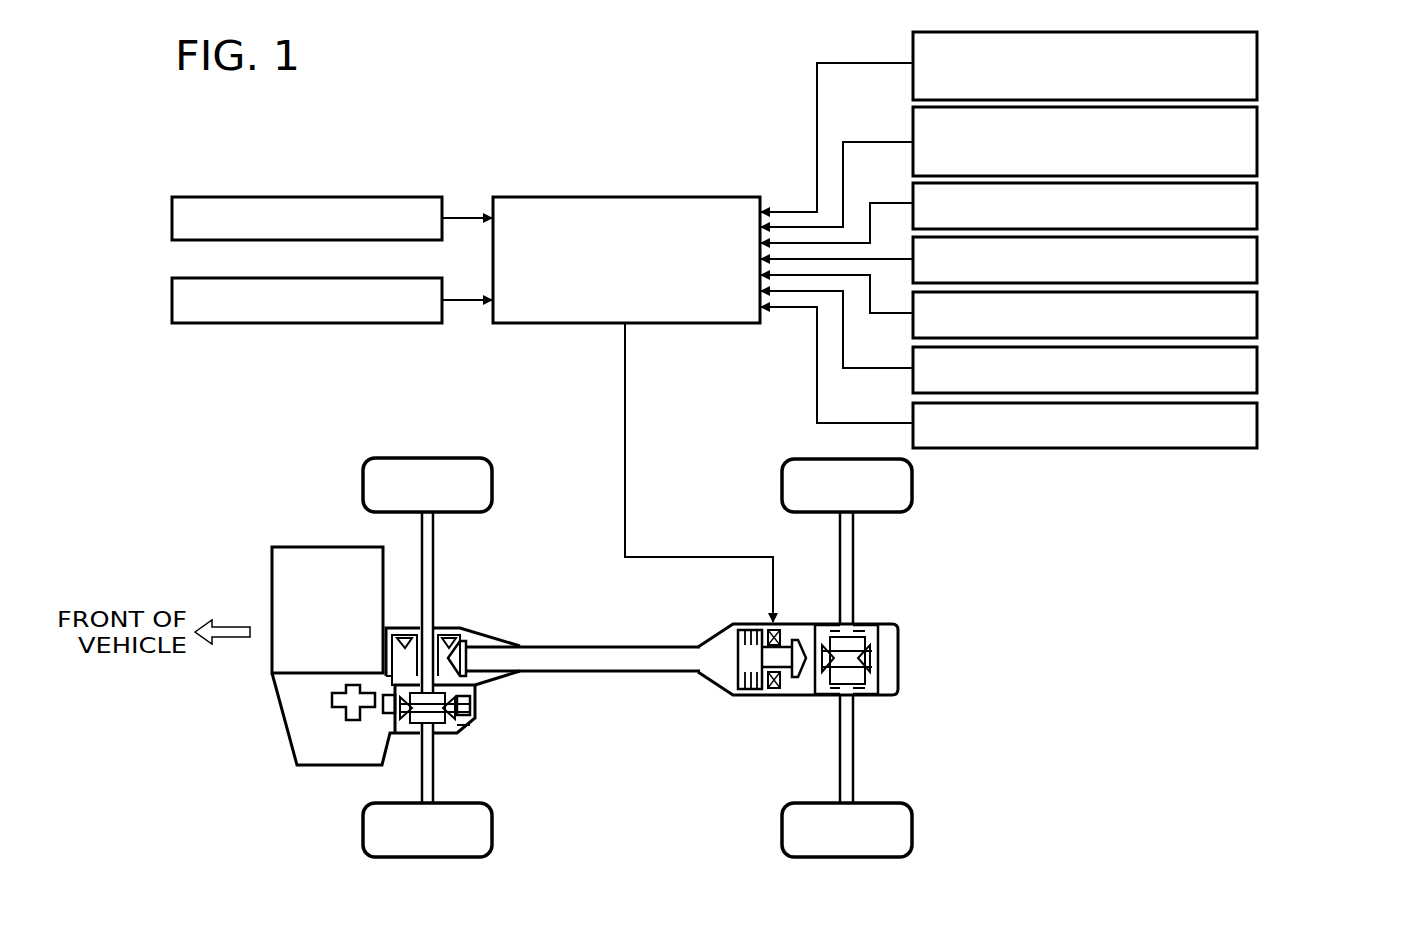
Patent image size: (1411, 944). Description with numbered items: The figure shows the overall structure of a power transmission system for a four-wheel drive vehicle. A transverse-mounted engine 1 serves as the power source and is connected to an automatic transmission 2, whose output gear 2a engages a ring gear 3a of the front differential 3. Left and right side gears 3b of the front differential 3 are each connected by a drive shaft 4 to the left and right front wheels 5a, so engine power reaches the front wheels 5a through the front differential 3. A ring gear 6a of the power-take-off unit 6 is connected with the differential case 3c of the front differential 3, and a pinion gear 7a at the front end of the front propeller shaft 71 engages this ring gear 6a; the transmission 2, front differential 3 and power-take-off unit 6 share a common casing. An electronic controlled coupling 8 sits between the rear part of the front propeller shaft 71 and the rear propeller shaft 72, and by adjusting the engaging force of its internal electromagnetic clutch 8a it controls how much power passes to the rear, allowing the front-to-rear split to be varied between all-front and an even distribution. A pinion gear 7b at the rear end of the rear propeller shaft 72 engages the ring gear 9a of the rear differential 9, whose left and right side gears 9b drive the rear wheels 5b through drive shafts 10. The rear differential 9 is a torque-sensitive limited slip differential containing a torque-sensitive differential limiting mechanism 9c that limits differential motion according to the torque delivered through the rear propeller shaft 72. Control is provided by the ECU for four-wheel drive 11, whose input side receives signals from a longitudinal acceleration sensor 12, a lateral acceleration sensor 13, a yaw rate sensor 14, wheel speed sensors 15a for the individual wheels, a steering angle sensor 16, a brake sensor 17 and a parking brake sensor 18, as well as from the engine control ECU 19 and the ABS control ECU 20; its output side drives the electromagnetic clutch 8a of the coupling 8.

The engine 1 is at (295, 547).
The automatic transmission 2 is at (275, 699).
The output gear 2a is at (363, 708).
The front differential gear unit 3 is at (467, 730).
The ring gear 3a is at (390, 710).
The side gears 3b is at (472, 695).
The differential case 3c is at (470, 720).
The drive shaft 4 is at (434, 534).
The front wheels 5a is at (493, 478).
The rear wheels 5b is at (784, 480).
The power-take-off unit 6 is at (447, 630).
The ring gear 6a is at (411, 630).
The pinion gear 7a is at (464, 646).
The front propeller shaft 71 is at (608, 646).
The pinion gear 7b is at (797, 640).
The rear propeller shaft 72 is at (761, 650).
The electronic controlled coupling 8 is at (748, 700).
The electromagnetic clutch 8a is at (770, 690).
The rear differential gear unit 9 is at (882, 644).
The ring gear 9a is at (886, 672).
The side gears 9b is at (850, 638).
The torque-sensitive differential limiting mechanism 9c is at (824, 695).
The drive shaft 10 is at (854, 534).
The ECU for four-wheel drive 11 is at (537, 197).
The longitudinal acceleration sensor 12 is at (1257, 49).
The lateral acceleration sensor 13 is at (1257, 147).
The yaw rate sensor 14 is at (1257, 203).
The wheel speed sensor 15a is at (1257, 258).
The steering angle sensor 16 is at (1257, 313).
The brake sensor 17 is at (1257, 368).
The parking brake sensor 18 is at (1257, 423).
The engine control ECU 19 is at (172, 210).
The ABS control ECU 20 is at (172, 292).